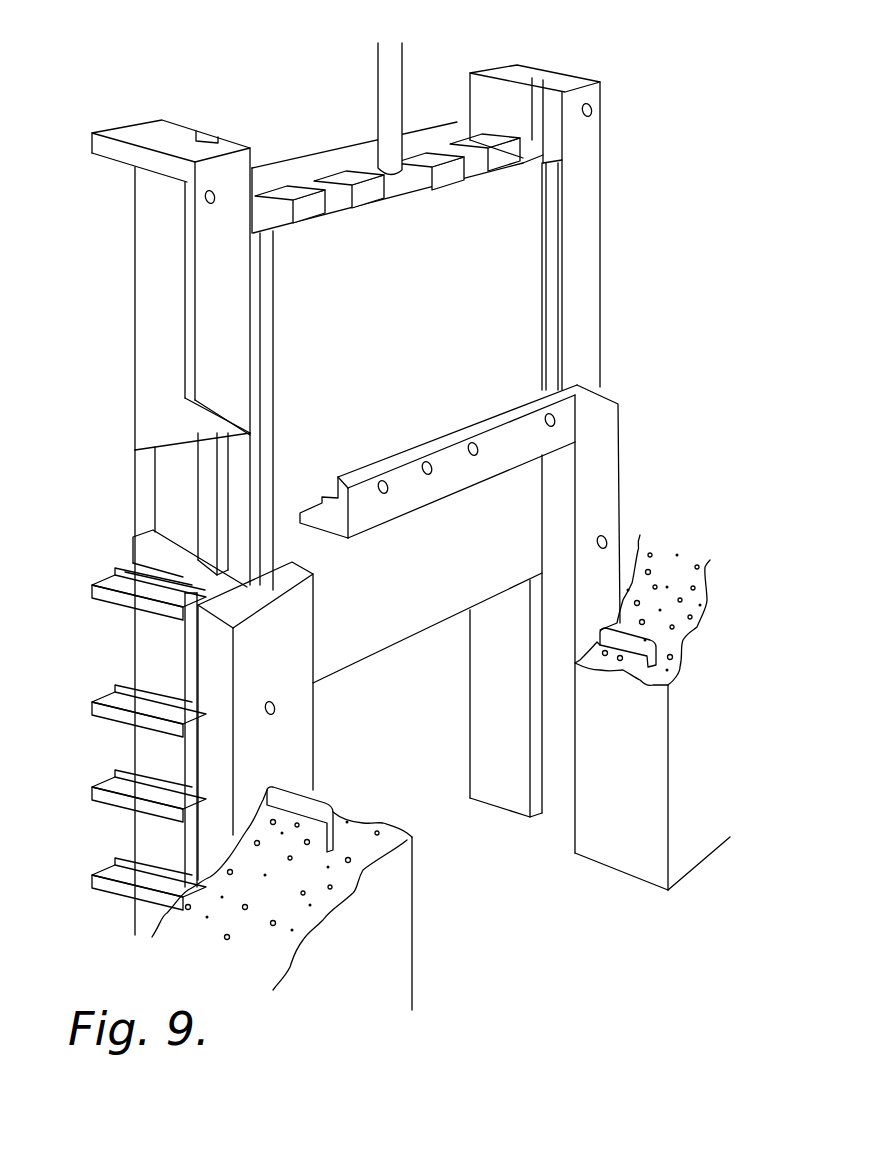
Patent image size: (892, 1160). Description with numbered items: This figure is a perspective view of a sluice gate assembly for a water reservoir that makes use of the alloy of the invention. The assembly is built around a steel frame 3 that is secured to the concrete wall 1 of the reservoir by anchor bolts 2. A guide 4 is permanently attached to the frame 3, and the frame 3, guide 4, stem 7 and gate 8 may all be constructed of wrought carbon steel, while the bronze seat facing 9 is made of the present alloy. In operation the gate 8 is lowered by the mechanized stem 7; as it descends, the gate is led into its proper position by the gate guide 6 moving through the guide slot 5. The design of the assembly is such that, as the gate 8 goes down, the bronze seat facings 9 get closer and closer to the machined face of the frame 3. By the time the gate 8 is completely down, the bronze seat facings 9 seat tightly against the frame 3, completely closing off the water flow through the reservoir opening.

The concrete wall 1 is at (293, 905).
The anchor bolts 2 is at (336, 836).
The frame 3 is at (595, 480).
The guide 4 is at (577, 260).
The guide slot 5 is at (218, 138).
The gate guide 6 is at (205, 510).
The stem 7 is at (385, 78).
The gate 8 is at (503, 277).
The bronze seat facing 9 is at (268, 378).